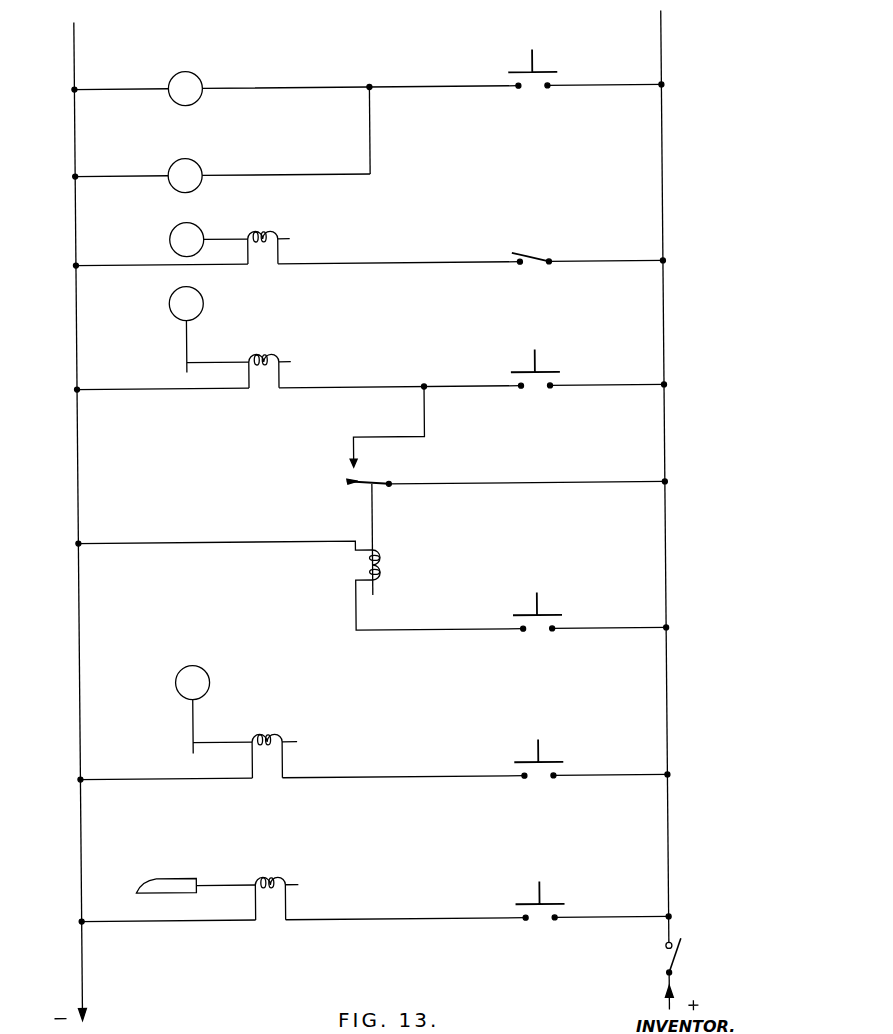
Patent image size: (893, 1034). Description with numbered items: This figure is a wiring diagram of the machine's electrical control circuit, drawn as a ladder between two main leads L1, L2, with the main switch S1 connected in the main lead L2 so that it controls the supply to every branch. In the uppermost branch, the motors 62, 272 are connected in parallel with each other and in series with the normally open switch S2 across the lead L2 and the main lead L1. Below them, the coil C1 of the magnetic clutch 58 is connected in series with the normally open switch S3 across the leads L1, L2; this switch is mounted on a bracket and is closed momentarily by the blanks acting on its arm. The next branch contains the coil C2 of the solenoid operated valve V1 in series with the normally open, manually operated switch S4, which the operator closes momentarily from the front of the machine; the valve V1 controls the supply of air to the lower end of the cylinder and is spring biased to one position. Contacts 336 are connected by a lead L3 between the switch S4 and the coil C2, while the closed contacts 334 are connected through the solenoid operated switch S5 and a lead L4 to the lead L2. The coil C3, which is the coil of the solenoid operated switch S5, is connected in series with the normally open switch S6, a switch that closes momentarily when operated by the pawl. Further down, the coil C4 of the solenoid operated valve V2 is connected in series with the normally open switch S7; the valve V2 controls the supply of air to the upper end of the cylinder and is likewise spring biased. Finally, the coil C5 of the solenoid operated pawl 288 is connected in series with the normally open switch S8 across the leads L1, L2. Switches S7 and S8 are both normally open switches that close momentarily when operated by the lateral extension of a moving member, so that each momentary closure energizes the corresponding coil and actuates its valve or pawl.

The main lead L1 is at (78, 643).
The main lead L2 is at (667, 699).
The lead L3 is at (425, 420).
The lead L4 is at (471, 488).
The switch S1 is at (667, 962).
The normally open switch S2 is at (545, 72).
The normally open switch S3 is at (539, 257).
The normally open manually operated switch S4 is at (545, 372).
The solenoid operated switch S5 is at (368, 481).
The normally open switch S6 is at (545, 615).
The normally open switch S7 is at (545, 762).
The normally open switch S8 is at (545, 904).
The coil of the magnetic clutch C1 is at (254, 233).
The coil of solenoid operated valve V1 C2 is at (255, 356).
The coil of the solenoid operated switch C3 is at (368, 564).
The coil of solenoid operated valve V2 C4 is at (257, 735).
The coil of the solenoid operated pawl C5 is at (260, 878).
The solenoid operated valve V1 is at (209, 329).
The solenoid operated valve V2 is at (213, 709).
The motor 272 is at (183, 79).
The motor 62 is at (184, 167).
The clutch 58 is at (149, 239).
The solenoid operated pawl 288 is at (169, 888).
The closed contacts 334 is at (350, 487).
The contacts 336 is at (348, 463).